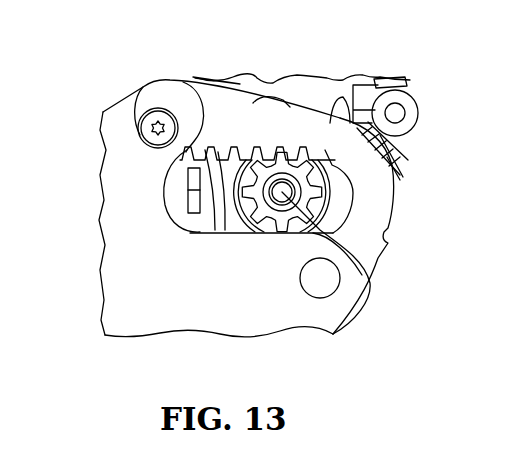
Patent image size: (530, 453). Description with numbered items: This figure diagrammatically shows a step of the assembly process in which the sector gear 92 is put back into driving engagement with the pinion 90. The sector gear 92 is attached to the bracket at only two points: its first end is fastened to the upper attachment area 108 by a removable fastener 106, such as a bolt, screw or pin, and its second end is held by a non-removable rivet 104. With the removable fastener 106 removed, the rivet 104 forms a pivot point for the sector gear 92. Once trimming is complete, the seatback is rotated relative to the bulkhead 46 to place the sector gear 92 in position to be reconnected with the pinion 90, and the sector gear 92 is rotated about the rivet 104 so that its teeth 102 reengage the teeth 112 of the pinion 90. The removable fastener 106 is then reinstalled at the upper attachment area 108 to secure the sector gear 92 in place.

The upper attachment area 108 is at (120, 115).
The removable fastener 106 is at (152, 128).
The sector gear 92 is at (250, 110).
The bulkhead 46 is at (403, 153).
The teeth 102 is at (208, 187).
The teeth 112 is at (313, 190).
The pinion 90 is at (372, 283).
The rivet 104 is at (323, 280).